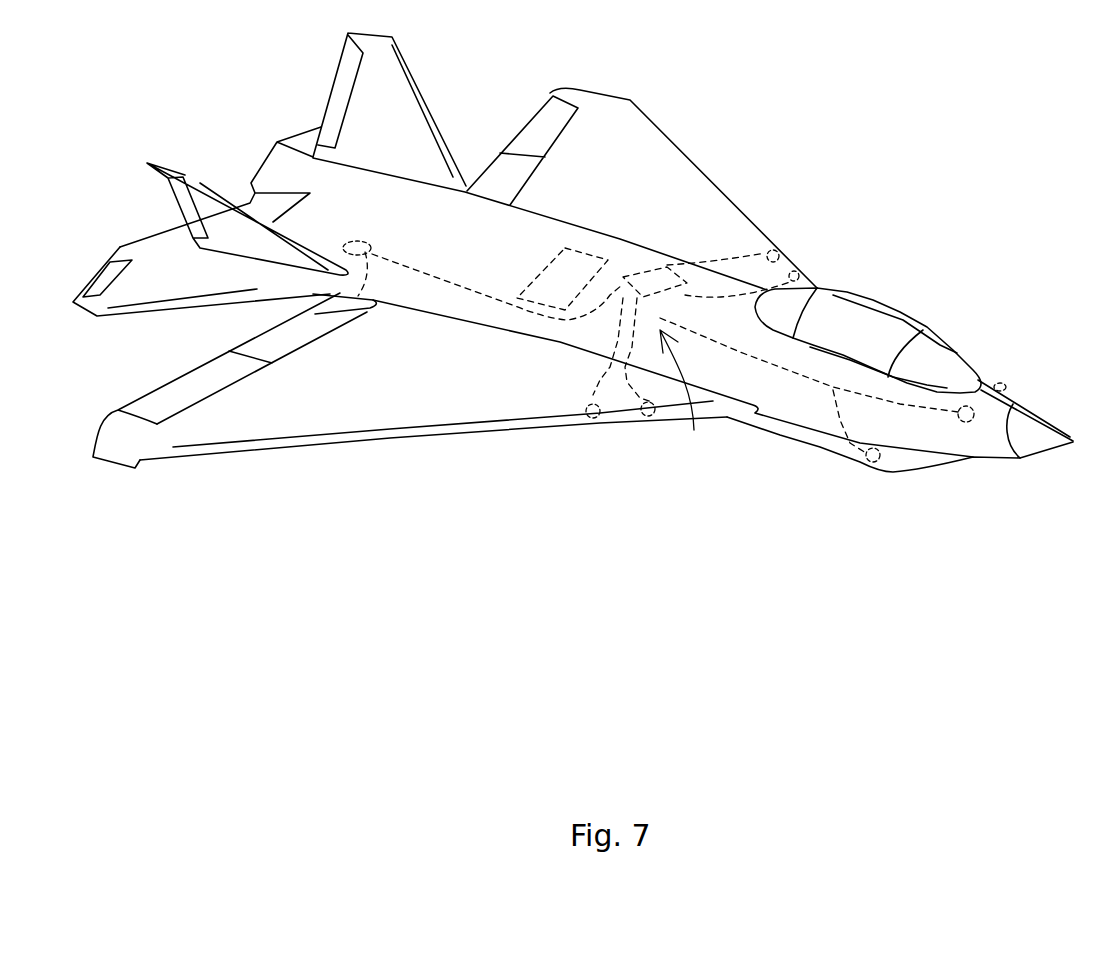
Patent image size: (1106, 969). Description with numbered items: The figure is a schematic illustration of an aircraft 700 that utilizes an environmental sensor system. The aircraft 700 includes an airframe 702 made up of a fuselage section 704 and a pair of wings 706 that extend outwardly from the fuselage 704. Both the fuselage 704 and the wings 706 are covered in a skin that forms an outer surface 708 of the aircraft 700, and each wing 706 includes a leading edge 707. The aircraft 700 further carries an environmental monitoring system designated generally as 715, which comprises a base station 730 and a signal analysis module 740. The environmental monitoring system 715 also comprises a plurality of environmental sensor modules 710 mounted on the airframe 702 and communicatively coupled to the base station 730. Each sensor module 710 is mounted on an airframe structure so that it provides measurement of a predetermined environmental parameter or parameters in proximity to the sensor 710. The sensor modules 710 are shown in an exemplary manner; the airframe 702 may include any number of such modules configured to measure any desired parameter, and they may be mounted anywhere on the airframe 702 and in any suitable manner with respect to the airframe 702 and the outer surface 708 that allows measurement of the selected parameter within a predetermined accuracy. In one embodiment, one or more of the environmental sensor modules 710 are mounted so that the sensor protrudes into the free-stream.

The aircraft 700 is at (840, 66).
The airframe 702 is at (473, 227).
The fuselage section 704 is at (340, 215).
The wings 706 is at (667, 162).
The leading edge 707 is at (743, 216).
The outer surface 708 is at (647, 332).
The environmental sensor modules 710 is at (780, 262).
The environmental monitoring system 715 is at (685, 404).
The base station 730 is at (647, 290).
The signal analysis module 740 is at (543, 270).